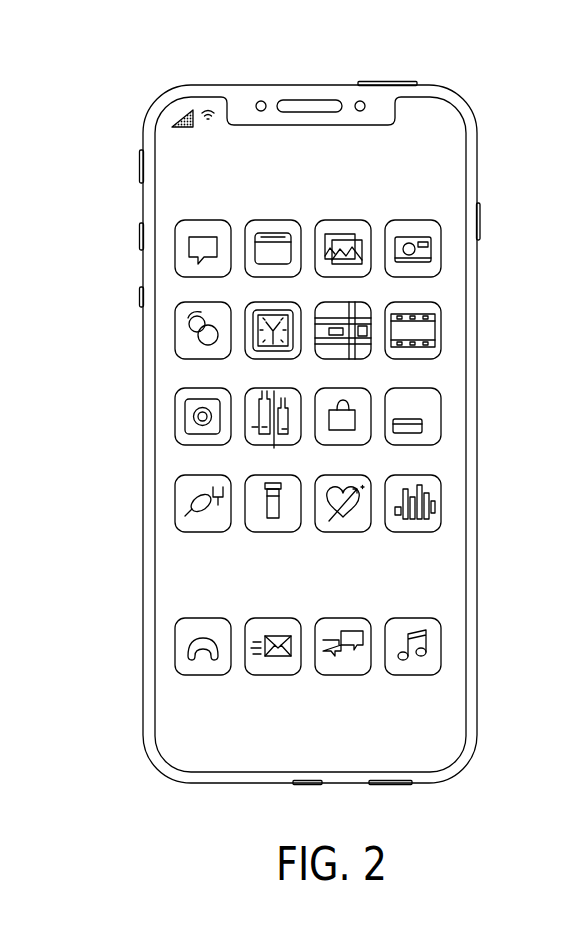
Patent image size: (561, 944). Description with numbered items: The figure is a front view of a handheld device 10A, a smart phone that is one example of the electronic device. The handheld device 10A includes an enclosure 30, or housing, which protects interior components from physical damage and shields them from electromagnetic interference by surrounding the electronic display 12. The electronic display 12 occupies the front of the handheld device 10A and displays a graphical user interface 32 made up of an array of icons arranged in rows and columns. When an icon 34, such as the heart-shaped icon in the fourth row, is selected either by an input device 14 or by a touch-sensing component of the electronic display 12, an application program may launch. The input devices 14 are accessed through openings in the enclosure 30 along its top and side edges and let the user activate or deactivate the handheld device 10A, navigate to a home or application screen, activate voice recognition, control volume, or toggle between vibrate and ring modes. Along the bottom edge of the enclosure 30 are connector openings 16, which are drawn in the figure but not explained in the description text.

The handheld device 10A is at (130, 70).
The electronic display 12 is at (466, 566).
The input devices 14 is at (140, 296).
The connector ports 16 is at (197, 784).
The enclosure 30 is at (478, 166).
The graphical user interface 32 is at (440, 376).
The icon 34 is at (330, 520).